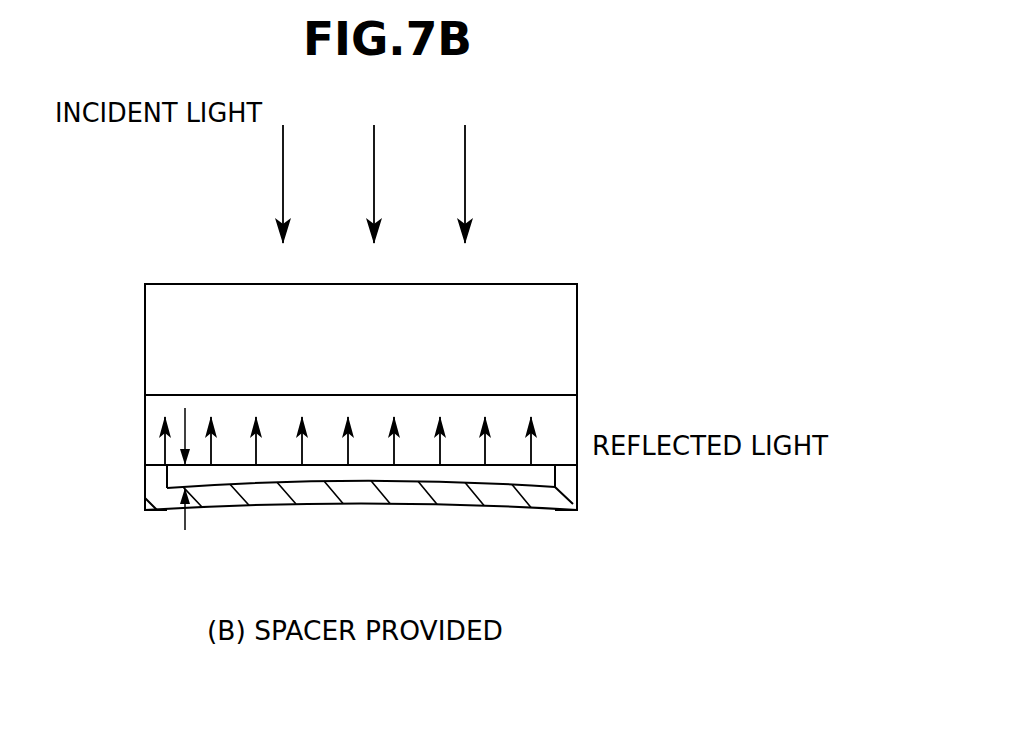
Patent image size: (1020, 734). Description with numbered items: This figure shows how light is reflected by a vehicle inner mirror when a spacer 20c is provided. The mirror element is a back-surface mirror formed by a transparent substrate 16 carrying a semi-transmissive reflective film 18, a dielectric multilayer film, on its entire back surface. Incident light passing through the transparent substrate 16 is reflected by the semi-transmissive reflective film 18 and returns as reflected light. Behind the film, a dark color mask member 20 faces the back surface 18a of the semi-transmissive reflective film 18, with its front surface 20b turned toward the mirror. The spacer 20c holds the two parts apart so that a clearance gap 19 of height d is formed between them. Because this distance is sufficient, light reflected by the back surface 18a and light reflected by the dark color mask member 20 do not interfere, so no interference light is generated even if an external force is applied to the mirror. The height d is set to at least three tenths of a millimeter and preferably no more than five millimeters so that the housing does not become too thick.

The transparent substrate 16 is at (145, 334).
The semi-transmissive reflective film 18 is at (145, 404).
The back surface of the semi-transmissive reflective film 18a is at (502, 467).
The clearance gap 19 is at (268, 472).
The dark color mask member 20 is at (215, 500).
The front surface of the dark color mask member 20b is at (530, 483).
The spacer 20c is at (143, 474).
The height of the spacer d is at (167, 490).